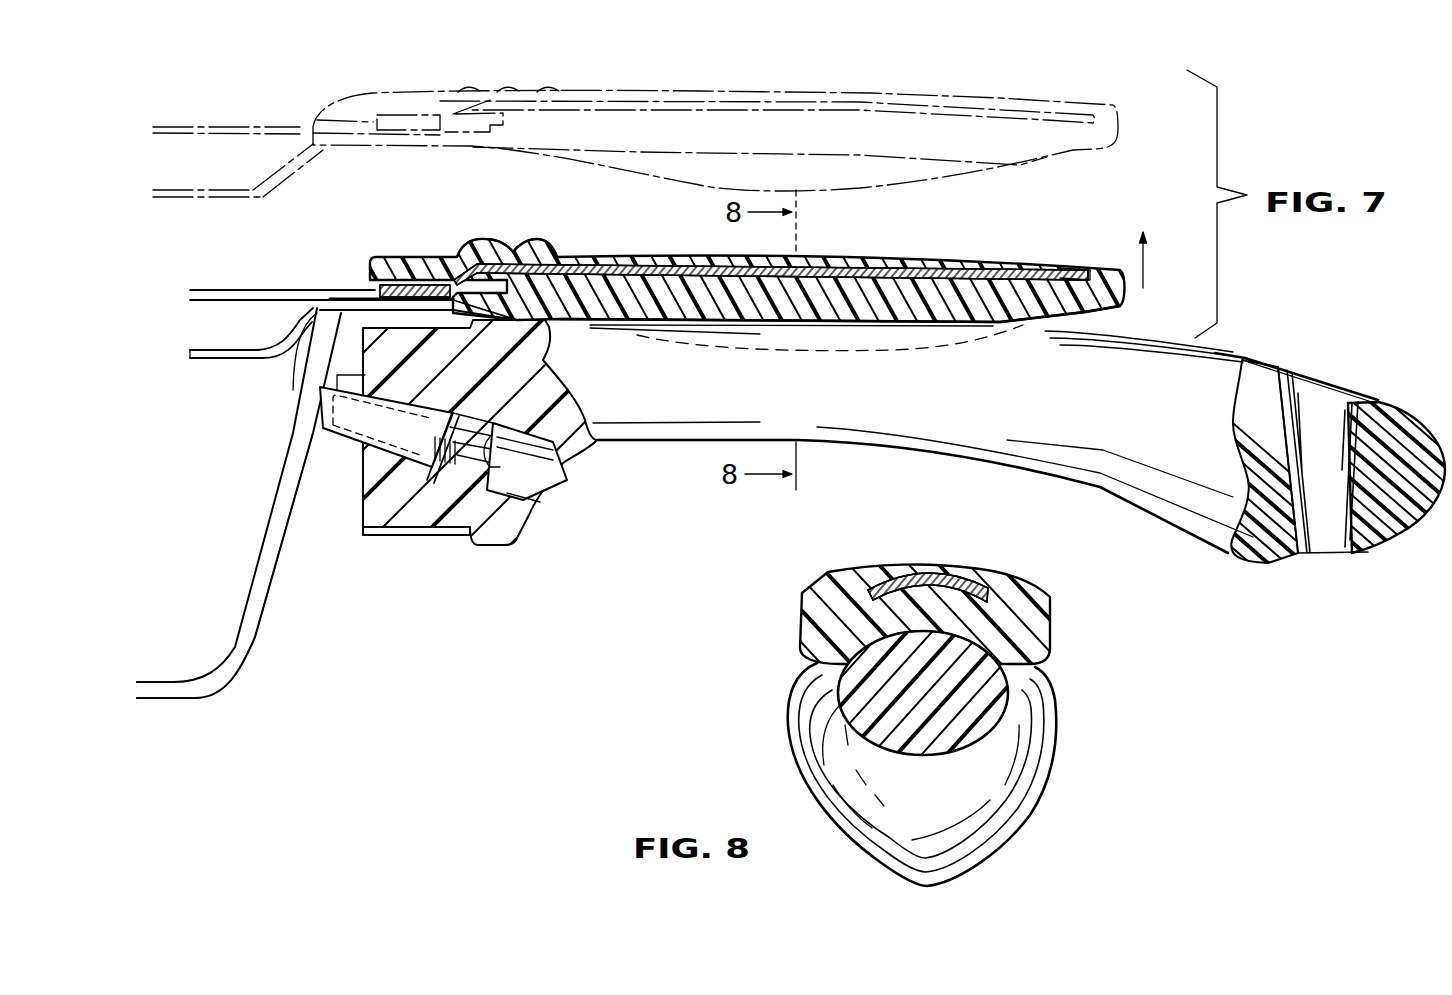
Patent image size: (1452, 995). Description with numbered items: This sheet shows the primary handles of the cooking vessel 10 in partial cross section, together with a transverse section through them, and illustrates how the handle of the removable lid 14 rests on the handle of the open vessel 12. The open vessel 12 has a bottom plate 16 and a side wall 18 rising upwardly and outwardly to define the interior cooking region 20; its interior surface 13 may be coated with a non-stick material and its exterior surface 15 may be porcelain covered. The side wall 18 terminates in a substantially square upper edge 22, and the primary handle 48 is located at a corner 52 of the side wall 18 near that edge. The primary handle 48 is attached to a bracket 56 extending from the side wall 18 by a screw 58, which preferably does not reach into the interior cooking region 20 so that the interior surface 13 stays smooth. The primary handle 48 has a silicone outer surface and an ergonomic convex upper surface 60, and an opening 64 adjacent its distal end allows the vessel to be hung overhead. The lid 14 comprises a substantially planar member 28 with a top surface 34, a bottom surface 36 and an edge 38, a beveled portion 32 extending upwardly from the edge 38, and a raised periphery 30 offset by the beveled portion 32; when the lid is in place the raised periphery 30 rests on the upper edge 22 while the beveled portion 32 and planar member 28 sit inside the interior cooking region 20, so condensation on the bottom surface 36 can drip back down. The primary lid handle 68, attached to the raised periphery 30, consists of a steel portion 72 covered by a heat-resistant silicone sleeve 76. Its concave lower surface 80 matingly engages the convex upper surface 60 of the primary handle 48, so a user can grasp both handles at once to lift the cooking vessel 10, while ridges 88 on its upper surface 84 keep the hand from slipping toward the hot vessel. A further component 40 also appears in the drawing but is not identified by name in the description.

In FIG. 7, the cooking vessel 10 is at (1338, 350).
In FIG. 7, the open vessel 12 is at (245, 521).
In FIG. 7, the interior surface 13 is at (272, 512).
In FIG. 7, the removable lid 14 is at (998, 250).
In FIG. 7, the exterior surface 15 is at (272, 587).
In FIG. 7, the bottom plate 16 is at (188, 687).
In FIG. 7, the side wall 18 is at (255, 635).
In FIG. 7, the interior cooking region 20 is at (210, 505).
In FIG. 7, the upper edge 22 is at (298, 372).
In FIG. 7, the substantially planar member 28 is at (192, 356).
In FIG. 7, the raised periphery 30 is at (252, 288).
In FIG. 7, the beveled portion 32 is at (306, 318).
In FIG. 7, the top surface 34 is at (225, 350).
In FIG. 7, the bottom surface 36 is at (243, 360).
In FIG. 7, the edge 38 is at (292, 406).
In FIG. 8, the handle shell 40 is at (1010, 787).
In FIG. 7, the primary handle 48 is at (1243, 352).
In FIG. 7, the corner 52 is at (302, 488).
In FIG. 7, the bracket 56 is at (355, 445).
In FIG. 7, the screw 58 is at (520, 490).
In FIG. 7, the convex upper surface 60 is at (1130, 337).
In FIG. 8, the convex upper surface 60 is at (1037, 650).
In FIG. 7, the opening 64 is at (1328, 433).
In FIG. 7, the primary lid handle 68 is at (878, 248).
In FIG. 8, the primary lid handle 68 is at (1045, 618).
In FIG. 7, the steel portion 72 is at (905, 262).
In FIG. 8, the steel portion 72 is at (900, 573).
In FIG. 7, the heat-resistant sleeve 76 is at (1055, 308).
In FIG. 8, the heat-resistant sleeve 76 is at (1020, 610).
In FIG. 8, the concave lower surface 80 is at (862, 675).
In FIG. 7, the upper surface 84 is at (620, 262).
In FIG. 8, the upper surface 84 is at (977, 572).
In FIG. 7, the ridges 88 is at (507, 233).